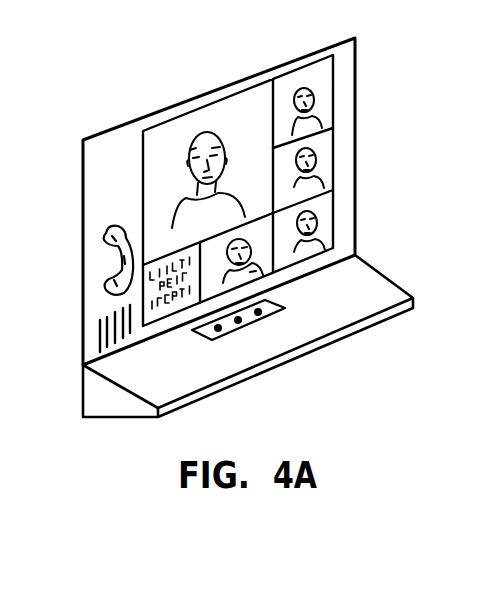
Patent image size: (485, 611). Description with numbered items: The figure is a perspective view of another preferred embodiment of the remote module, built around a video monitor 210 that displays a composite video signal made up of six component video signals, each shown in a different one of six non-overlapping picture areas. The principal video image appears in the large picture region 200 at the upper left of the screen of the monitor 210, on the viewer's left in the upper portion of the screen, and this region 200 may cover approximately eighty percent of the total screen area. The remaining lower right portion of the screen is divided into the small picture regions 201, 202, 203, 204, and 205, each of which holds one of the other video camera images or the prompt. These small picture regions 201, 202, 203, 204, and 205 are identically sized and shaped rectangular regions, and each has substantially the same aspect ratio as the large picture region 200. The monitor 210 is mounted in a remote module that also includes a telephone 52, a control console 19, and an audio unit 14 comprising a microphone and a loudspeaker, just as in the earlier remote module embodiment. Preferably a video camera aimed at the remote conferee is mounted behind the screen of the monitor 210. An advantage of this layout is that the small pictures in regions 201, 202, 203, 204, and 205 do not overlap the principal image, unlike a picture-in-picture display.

The video monitor 210 is at (199, 88).
The large picture region 200 is at (167, 147).
The small picture region 201 is at (325, 85).
The small picture region 202 is at (325, 155).
The small picture region 203 is at (325, 222).
The small picture region 204 is at (265, 265).
The small picture region 205 is at (165, 310).
The telephone 52 is at (110, 258).
The audio unit 14 is at (102, 341).
The control console 19 is at (242, 330).